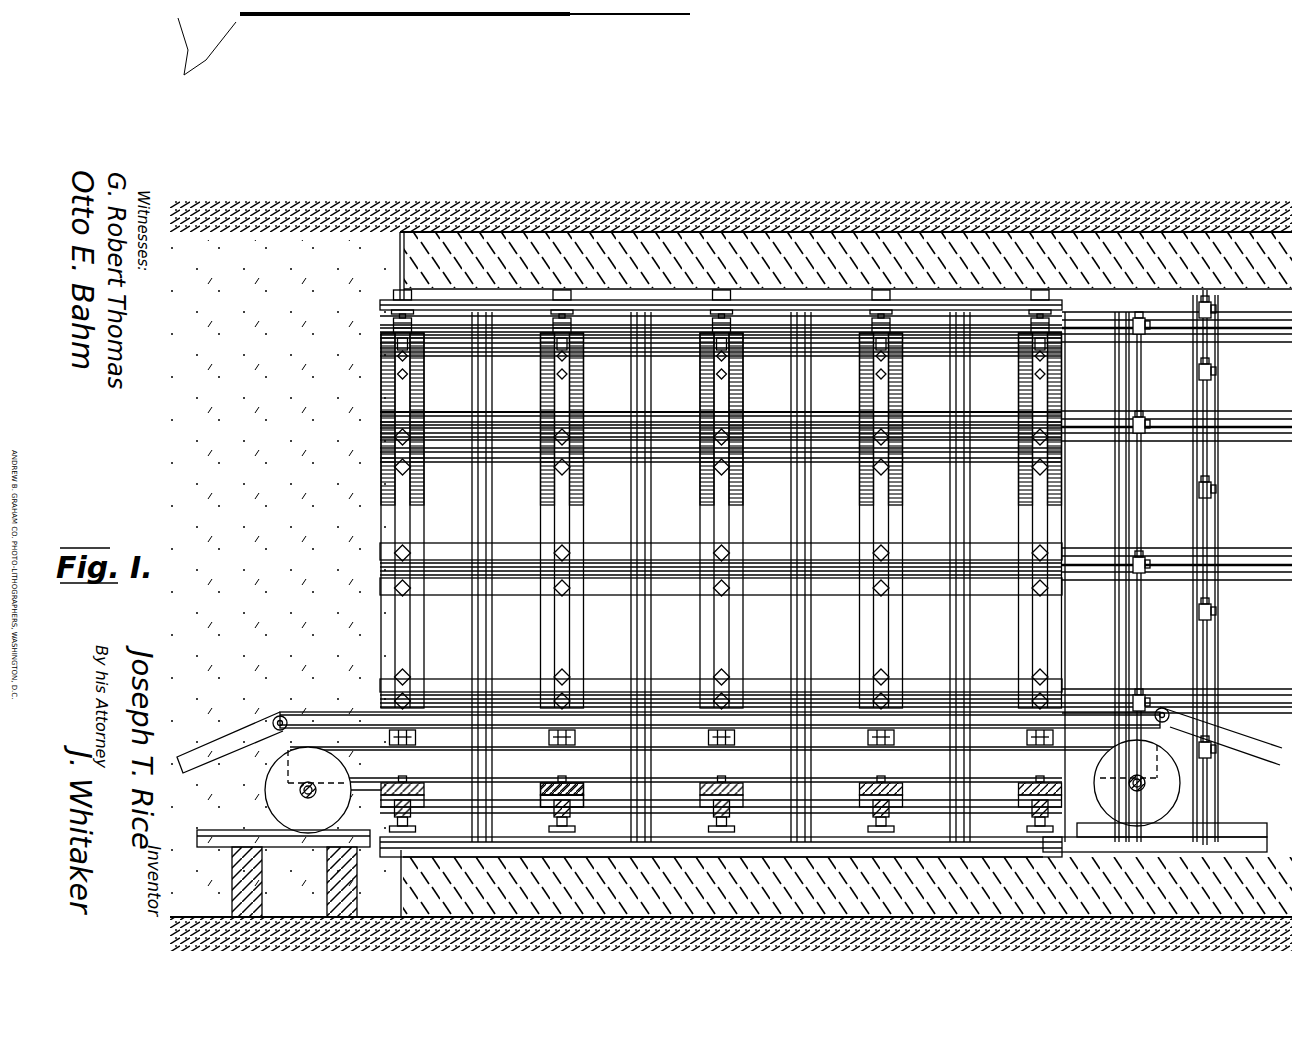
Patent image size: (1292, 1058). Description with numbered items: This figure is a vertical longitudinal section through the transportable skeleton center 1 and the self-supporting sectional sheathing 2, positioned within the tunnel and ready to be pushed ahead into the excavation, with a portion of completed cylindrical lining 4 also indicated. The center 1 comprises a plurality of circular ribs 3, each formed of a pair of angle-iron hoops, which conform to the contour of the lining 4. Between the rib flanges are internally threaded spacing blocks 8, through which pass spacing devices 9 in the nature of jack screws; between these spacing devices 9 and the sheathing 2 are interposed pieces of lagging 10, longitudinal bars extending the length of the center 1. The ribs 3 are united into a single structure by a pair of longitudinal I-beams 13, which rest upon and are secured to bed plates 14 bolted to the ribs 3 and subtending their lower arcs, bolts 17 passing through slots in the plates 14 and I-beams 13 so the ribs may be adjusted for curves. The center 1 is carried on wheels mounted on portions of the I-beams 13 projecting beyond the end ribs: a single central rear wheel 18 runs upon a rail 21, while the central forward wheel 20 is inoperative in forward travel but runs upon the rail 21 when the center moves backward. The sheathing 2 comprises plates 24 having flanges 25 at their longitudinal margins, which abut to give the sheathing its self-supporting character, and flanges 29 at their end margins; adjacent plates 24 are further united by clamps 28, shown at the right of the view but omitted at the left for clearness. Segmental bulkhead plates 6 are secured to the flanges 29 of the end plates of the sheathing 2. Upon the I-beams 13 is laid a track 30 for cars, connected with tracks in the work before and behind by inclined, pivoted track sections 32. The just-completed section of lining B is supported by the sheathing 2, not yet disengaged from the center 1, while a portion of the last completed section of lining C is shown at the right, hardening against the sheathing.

The transportable skeleton center 1 is at (380, 453).
The self-supporting sectional sheathing 2 is at (1177, 406).
The rib 3 is at (583, 534).
The cylindrical lining 4 is at (816, 926).
The segmental bulkhead plate 6 is at (398, 275).
The spacing block 8 is at (716, 605).
The spacing device 9 is at (736, 548).
The lagging 10 is at (1063, 307).
The I-beam 13 is at (720, 743).
The bed plate 14 is at (586, 784).
The bolt 17 is at (410, 784).
The rear wheel 18 is at (1137, 783).
The central forward wheel 20 is at (308, 790).
The rail 21 is at (1175, 833).
The plate 24 is at (1141, 568).
The flange 25 is at (1238, 560).
The clamp 28 is at (1141, 418).
The flange 29 is at (1210, 615).
The track 30 is at (1130, 644).
The inclined track section 32 is at (205, 748).
The just-completed section of lining B is at (487, 258).
The last completed section of lining C is at (1155, 250).